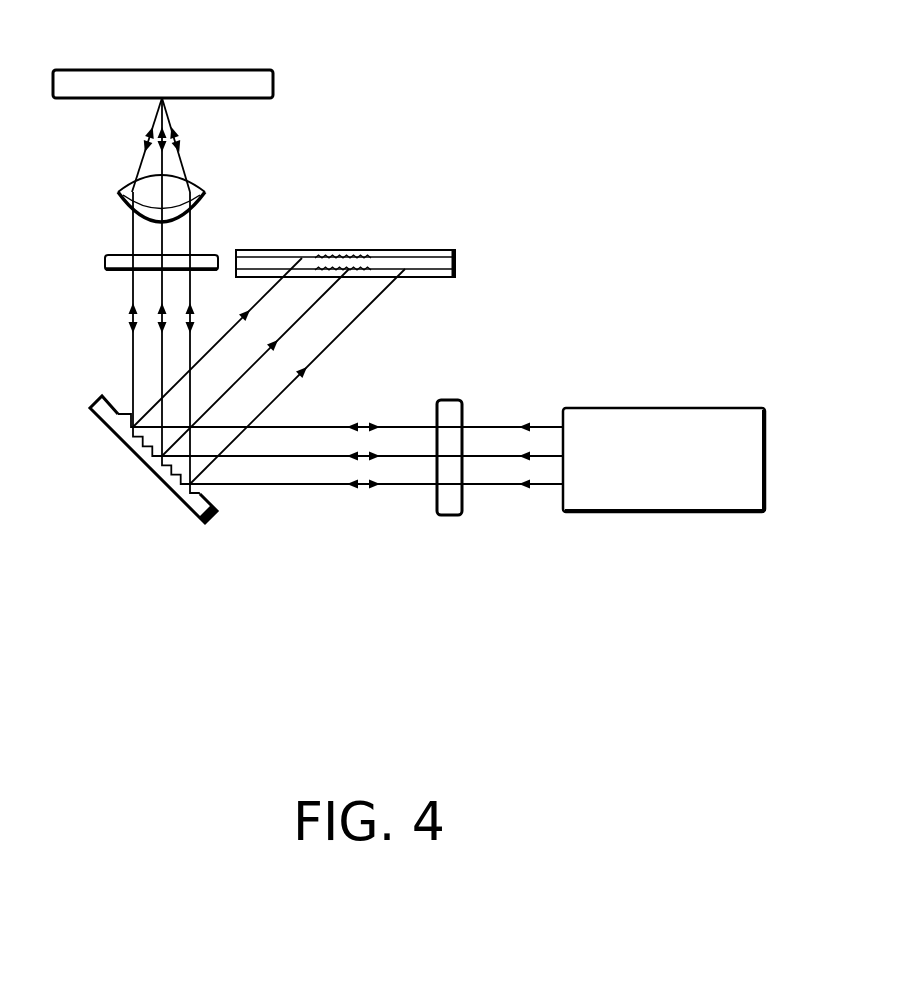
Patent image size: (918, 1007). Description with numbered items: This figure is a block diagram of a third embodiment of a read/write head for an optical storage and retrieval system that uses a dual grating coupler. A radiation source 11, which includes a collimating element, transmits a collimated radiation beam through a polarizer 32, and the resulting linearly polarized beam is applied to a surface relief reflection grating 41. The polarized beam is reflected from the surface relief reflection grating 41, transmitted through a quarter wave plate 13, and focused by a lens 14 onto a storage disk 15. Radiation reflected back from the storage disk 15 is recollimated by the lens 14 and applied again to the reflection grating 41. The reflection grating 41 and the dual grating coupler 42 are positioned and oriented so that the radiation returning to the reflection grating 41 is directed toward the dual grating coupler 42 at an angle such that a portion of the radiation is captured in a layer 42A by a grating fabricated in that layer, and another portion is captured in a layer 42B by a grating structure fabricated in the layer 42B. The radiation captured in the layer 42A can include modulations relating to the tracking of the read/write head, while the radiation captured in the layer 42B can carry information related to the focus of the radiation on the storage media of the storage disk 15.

The radiation source 11 is at (665, 408).
The quarter wave plate 13 is at (105, 255).
The lens 14 is at (126, 194).
The storage disk 15 is at (162, 70).
The polarizer 32 is at (447, 400).
The surface relief reflection grating 41 is at (152, 471).
The dual grating coupler 42 is at (422, 250).
The layer 42A is at (455, 278).
The layer 42B is at (455, 250).